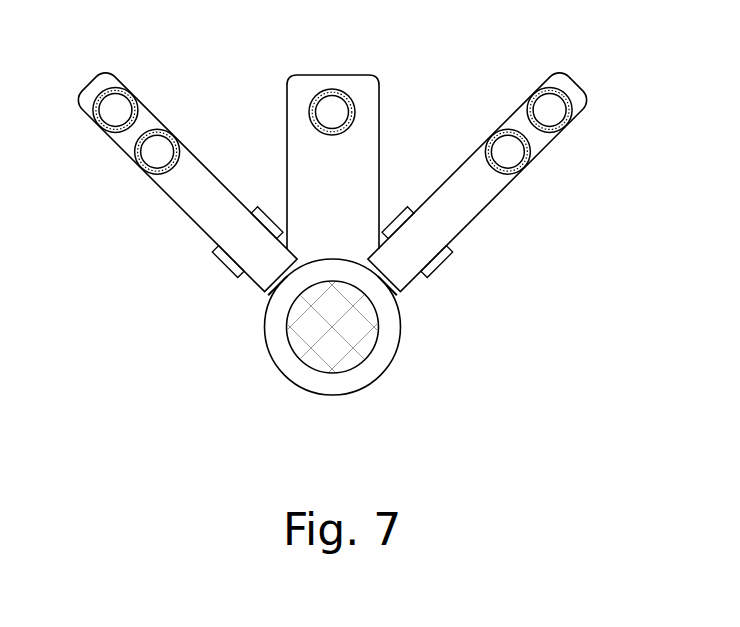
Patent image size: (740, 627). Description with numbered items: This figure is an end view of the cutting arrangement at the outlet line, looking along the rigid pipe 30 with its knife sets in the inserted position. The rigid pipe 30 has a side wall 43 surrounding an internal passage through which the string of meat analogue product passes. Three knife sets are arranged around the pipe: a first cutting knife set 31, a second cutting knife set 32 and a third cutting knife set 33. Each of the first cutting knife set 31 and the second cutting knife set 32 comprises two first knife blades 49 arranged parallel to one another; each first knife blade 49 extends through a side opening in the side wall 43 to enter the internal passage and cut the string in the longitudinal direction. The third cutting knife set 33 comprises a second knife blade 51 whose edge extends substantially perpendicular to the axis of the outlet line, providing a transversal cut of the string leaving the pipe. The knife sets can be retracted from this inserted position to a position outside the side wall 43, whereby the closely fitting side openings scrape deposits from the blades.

The rigid pipe 30 is at (406, 346).
The first cutting knife set 31 is at (170, 208).
The second cutting knife set 32 is at (562, 152).
The third cutting knife set 33 is at (380, 99).
The side wall 43 is at (380, 368).
The first knife blade 49 is at (302, 319).
The second knife blade 51 is at (333, 292).